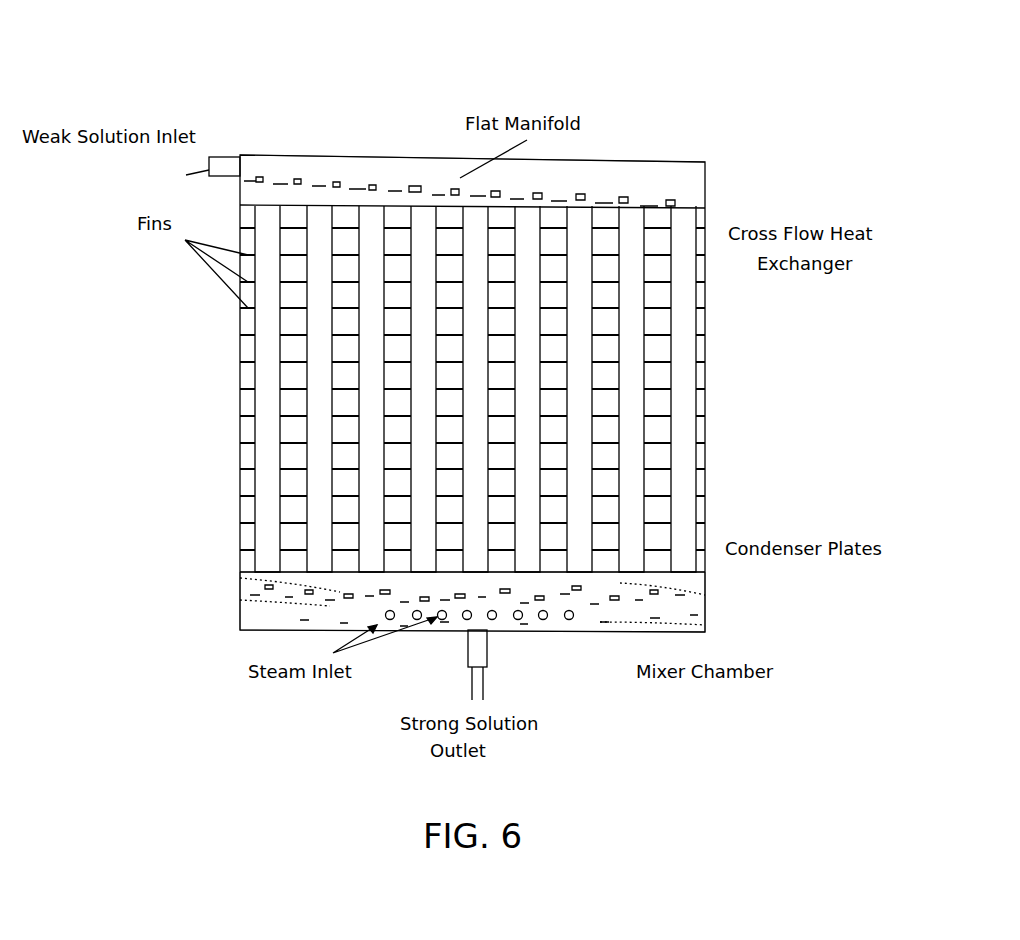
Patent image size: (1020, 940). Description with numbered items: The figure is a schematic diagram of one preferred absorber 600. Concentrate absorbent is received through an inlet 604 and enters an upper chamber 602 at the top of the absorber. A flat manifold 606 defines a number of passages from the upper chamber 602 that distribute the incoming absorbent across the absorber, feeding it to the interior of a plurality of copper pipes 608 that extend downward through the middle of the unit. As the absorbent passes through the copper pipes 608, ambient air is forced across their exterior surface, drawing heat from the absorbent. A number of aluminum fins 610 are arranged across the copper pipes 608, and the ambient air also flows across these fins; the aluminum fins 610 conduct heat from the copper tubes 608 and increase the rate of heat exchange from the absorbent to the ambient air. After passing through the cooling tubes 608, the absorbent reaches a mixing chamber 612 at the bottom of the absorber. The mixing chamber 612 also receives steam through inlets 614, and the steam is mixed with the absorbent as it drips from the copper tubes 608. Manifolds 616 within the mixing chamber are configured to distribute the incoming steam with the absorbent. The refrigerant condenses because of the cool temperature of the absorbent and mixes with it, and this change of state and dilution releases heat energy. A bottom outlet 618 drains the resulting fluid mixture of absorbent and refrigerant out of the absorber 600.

The absorber 600 is at (705, 168).
The upper chamber 602 is at (603, 168).
The inlet 604 is at (228, 156).
The flat manifold 606 is at (392, 188).
The copper pipes 608 is at (690, 437).
The aluminum fins 610 is at (240, 330).
The mixing chamber 612 is at (705, 605).
The inlets 614 is at (437, 618).
The manifolds 616 is at (265, 588).
The bottom outlet 618 is at (484, 688).